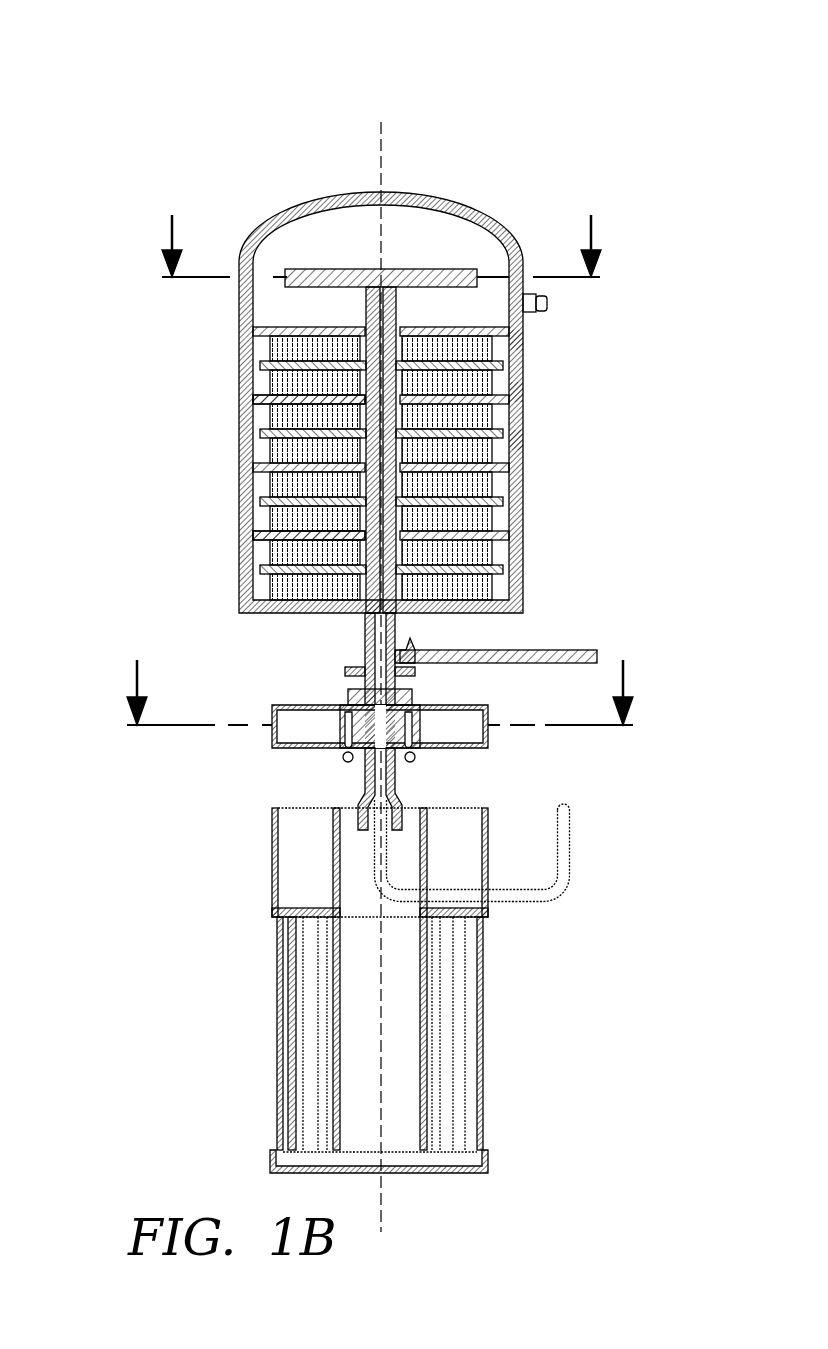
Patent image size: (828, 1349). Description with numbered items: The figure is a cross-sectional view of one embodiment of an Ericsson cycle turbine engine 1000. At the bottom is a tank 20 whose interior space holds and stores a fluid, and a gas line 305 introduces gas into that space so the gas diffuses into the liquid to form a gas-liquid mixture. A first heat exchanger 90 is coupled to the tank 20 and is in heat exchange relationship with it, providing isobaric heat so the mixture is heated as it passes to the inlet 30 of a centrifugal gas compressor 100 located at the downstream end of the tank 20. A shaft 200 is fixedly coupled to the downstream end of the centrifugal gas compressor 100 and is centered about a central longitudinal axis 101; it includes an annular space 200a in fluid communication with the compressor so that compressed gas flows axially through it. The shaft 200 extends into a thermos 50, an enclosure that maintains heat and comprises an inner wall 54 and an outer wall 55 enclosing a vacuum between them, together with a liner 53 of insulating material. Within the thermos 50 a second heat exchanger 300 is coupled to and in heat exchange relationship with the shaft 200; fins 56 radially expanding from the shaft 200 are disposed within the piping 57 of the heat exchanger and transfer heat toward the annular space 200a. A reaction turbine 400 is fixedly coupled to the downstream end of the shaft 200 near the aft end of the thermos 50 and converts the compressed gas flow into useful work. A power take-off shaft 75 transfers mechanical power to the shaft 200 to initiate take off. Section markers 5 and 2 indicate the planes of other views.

The Ericsson cycle turbine engine 1000 is at (230, 150).
The central longitudinal axis 101 is at (384, 160).
The thermos 50 is at (222, 340).
The outer wall 55 is at (523, 342).
The inner wall 54 is at (523, 392).
The liner 53 is at (523, 440).
The section line 5- 5 is at (381, 229).
The reaction turbine 400 is at (319, 265).
The second heat exchanger 300 is at (515, 484).
The fins 56 is at (262, 420).
The piping 57 is at (258, 553).
The shaft 200 is at (355, 634).
The annular space 200a is at (398, 626).
The power take-off shaft 75 is at (573, 650).
The section line 2- 2 is at (380, 676).
The centrifugal gas compressor 100 is at (258, 747).
The inlet 30 is at (402, 795).
The gas line 305 is at (568, 847).
The tank 20 is at (262, 847).
The first heat exchanger 90 is at (290, 995).